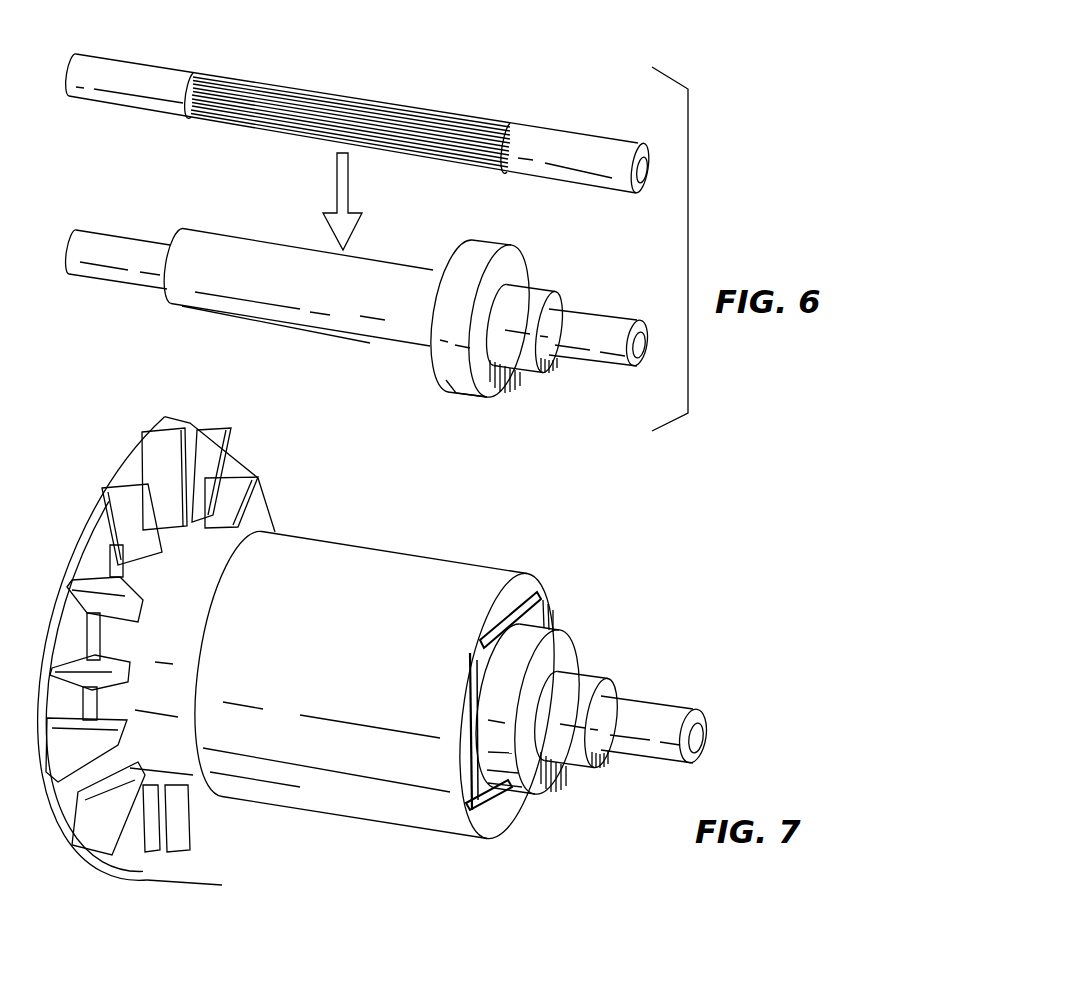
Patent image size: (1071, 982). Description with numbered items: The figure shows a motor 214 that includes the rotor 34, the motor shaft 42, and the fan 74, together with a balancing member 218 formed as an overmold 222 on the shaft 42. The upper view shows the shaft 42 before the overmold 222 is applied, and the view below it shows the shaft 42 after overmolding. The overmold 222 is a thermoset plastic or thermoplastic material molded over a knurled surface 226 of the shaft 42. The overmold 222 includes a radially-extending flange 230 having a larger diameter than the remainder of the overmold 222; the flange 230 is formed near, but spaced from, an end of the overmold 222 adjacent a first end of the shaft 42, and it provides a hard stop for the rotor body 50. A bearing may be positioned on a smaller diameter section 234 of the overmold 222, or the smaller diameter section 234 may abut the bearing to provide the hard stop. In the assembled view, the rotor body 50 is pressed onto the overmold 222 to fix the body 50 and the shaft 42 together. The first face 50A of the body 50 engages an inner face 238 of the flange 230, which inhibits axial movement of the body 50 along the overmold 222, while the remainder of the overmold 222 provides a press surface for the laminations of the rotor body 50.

In FIG. 7, the rotor 34 is at (351, 681).
In FIG. 6, the motor shaft 42 is at (588, 146).
In FIG. 7, the motor shaft 42 is at (673, 718).
In FIG. 7, the rotor body 50 is at (307, 783).
In FIG. 7, the first face 50A is at (500, 820).
In FIG. 7, the fan 74 is at (128, 458).
In FIG. 7, the motor 214 is at (387, 644).
In FIG. 6, the balancing member 218 is at (340, 325).
In FIG. 7, the balancing member 218 is at (605, 691).
In FIG. 6, the overmold 222 is at (213, 300).
In FIG. 7, the overmold 222 is at (567, 657).
In FIG. 6, the knurled surface 226 is at (440, 120).
In FIG. 6, the radially-extending flange 230 is at (475, 249).
In FIG. 7, the radially-extending flange 230 is at (517, 643).
In FIG. 6, the smaller diameter section 234 is at (535, 292).
In FIG. 7, the smaller diameter section 234 is at (581, 757).
In FIG. 6, the inner face 238 is at (428, 366).